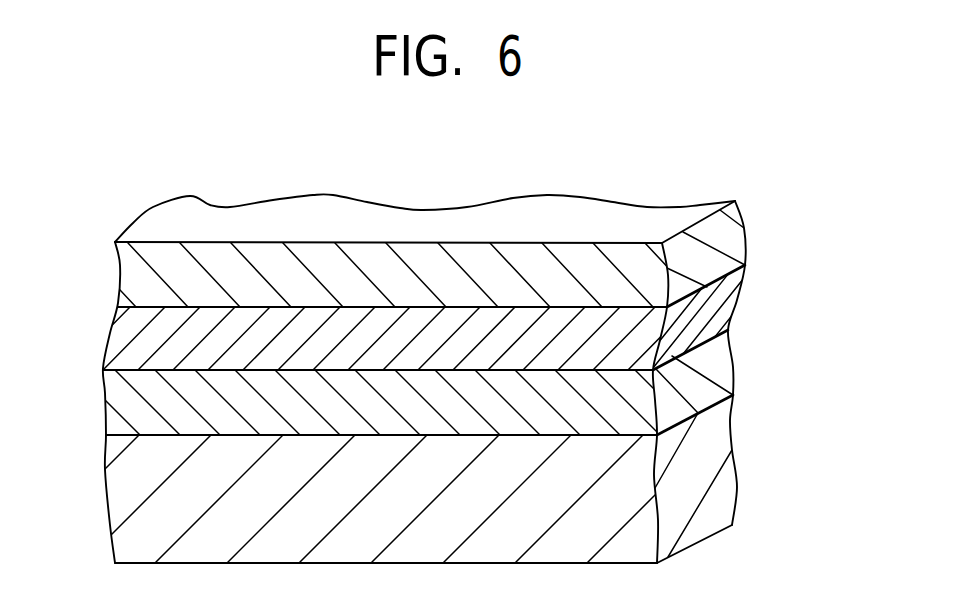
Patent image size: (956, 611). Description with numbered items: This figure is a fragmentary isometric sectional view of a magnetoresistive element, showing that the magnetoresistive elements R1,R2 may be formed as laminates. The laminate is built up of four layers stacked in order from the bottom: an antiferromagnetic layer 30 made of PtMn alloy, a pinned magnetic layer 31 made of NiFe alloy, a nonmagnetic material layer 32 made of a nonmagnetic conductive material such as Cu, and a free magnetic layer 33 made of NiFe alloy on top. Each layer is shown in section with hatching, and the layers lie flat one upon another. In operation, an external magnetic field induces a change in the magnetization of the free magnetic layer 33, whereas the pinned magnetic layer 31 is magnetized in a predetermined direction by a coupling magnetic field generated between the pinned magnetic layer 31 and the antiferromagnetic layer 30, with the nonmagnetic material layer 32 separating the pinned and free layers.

The antiferromagnetic layer 30 is at (162, 495).
The pinned magnetic layer 31 is at (160, 400).
The nonmagnetic material layer 32 is at (160, 342).
The free magnetic layer 33 is at (152, 278).
The magnetoresistive elements R1,R2 is at (757, 229).